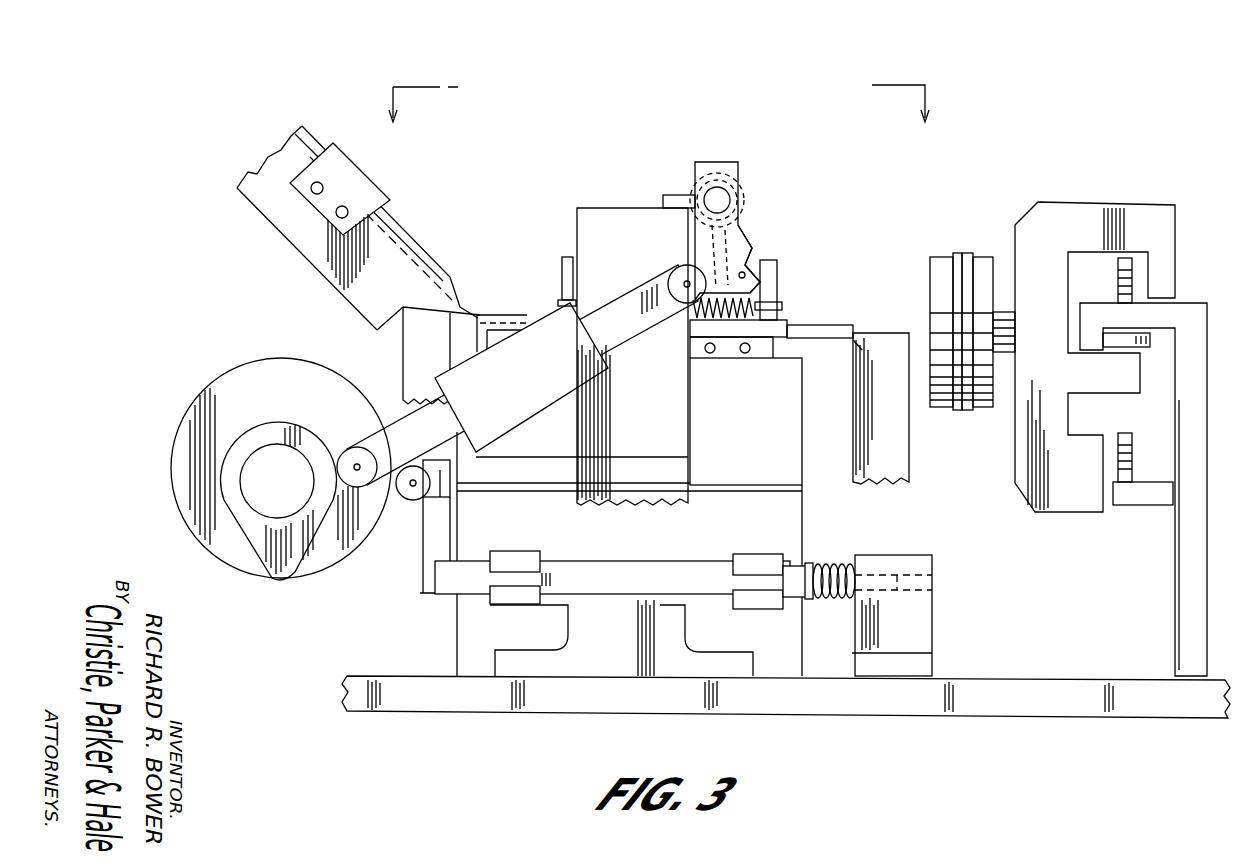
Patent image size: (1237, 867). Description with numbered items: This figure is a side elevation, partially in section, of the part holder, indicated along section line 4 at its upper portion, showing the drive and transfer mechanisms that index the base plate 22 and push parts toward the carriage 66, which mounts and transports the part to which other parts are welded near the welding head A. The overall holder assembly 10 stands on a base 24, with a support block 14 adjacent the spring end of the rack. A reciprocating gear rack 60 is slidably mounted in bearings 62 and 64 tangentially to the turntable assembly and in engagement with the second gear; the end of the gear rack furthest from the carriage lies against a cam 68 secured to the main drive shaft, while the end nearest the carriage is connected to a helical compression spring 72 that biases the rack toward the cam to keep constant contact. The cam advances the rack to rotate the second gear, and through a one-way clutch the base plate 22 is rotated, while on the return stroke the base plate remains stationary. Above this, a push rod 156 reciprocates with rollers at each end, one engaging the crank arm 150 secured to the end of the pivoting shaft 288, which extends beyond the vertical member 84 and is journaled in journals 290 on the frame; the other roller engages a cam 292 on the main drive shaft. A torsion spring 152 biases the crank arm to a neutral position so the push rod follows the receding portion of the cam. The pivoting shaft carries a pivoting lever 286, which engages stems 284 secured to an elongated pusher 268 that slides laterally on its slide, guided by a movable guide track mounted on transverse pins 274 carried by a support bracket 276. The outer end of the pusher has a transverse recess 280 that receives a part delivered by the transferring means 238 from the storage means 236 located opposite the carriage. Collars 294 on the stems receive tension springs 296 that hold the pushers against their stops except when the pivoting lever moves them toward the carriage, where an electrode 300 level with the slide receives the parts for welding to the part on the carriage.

The section line 4- 4 is at (655, 124).
The cam 10 is at (258, 473).
The stop block 14 is at (937, 632).
The base plate 22 is at (785, 438).
The base plate 24 is at (380, 672).
The gear rack 60 is at (646, 562).
The bearing 62 is at (518, 600).
The bearing 64 is at (528, 556).
The carriage 66 is at (1049, 537).
The cam 68 is at (326, 570).
The helical compression spring 72 is at (838, 563).
The vertical member 84 is at (636, 652).
The crank arm 150 is at (730, 167).
The torsion spring 152 is at (712, 251).
The push rod 156 is at (632, 326).
The means for storing a supply of parts 236 is at (272, 224).
The means for transferring a part 238 is at (366, 186).
The elongated pusher 268 is at (846, 330).
The transverse pins 274 is at (748, 355).
The support bracket 276 is at (711, 355).
The transverse recess 280 is at (860, 346).
The stems 284 is at (566, 257).
The pivoting lever 286 is at (745, 247).
The pivoting shaft 288 is at (722, 200).
The journals 290 is at (678, 193).
The cam 292 is at (240, 550).
The collars 294 is at (784, 306).
The tension springs 296 is at (752, 301).
The electrode 300 is at (912, 466).
The welding head A is at (935, 256).